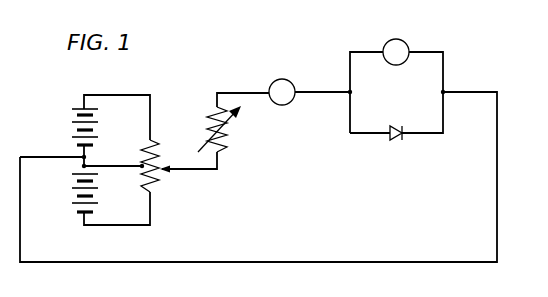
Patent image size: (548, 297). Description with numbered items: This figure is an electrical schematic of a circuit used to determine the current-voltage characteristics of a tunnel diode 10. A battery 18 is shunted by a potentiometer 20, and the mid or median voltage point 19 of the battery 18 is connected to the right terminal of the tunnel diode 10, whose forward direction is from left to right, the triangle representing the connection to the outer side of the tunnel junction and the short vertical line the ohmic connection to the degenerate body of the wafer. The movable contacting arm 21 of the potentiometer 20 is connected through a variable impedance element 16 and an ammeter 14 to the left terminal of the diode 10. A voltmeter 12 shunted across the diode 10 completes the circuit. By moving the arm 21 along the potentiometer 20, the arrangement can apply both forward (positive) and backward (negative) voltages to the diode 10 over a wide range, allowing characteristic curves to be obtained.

The tunnel diode 10 is at (395, 142).
The voltmeter 12 is at (408, 44).
The ammeter 14 is at (281, 79).
The variable impedance element 16 is at (228, 135).
The battery 18 is at (65, 193).
The mid or median voltage point 19 is at (104, 133).
The potentiometer 20 is at (160, 142).
The movable contacting arm 21 is at (185, 170).